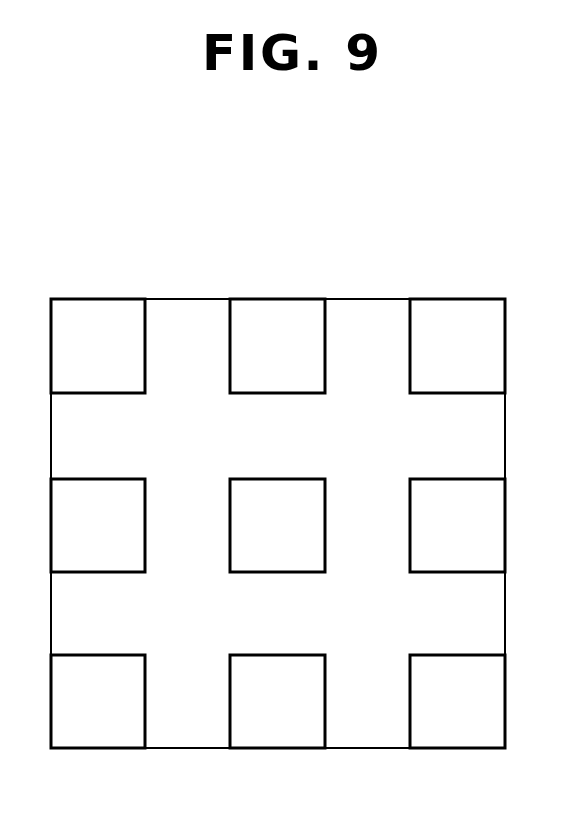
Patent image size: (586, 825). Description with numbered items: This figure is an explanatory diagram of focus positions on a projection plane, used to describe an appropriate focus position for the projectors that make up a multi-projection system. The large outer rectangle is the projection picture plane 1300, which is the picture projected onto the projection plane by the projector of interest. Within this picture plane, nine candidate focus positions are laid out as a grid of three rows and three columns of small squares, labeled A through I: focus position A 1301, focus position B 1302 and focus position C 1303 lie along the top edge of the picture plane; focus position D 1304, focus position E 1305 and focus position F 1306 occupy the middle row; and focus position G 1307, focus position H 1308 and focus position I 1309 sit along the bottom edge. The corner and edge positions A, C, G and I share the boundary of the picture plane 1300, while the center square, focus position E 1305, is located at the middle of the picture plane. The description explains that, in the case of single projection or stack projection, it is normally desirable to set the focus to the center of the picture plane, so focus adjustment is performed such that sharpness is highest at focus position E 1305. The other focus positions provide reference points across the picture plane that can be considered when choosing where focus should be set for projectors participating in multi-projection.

The projection picture plane 1300 is at (196, 299).
The focus position A 1301 is at (74, 306).
The focus position B 1302 is at (307, 306).
The focus position C 1303 is at (487, 306).
The focus position D 1304 is at (88, 488).
The focus position E 1305 is at (306, 488).
The focus position F 1306 is at (466, 488).
The focus position G 1307 is at (86, 664).
The focus position H 1308 is at (306, 664).
The focus position I 1309 is at (466, 664).